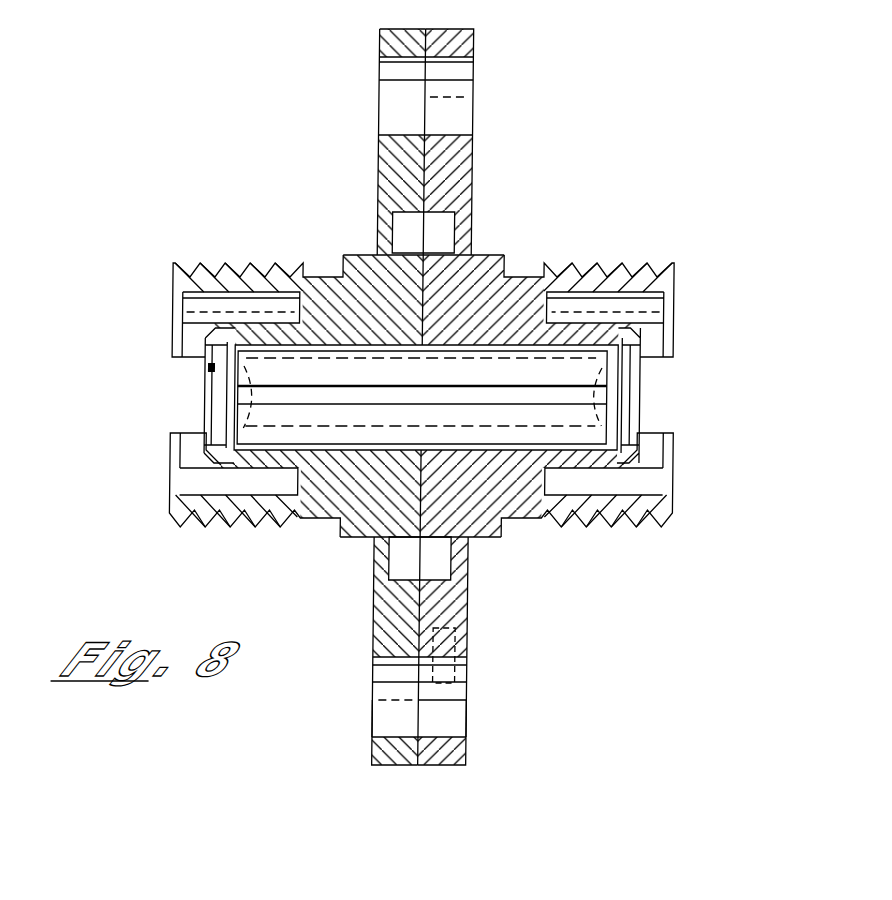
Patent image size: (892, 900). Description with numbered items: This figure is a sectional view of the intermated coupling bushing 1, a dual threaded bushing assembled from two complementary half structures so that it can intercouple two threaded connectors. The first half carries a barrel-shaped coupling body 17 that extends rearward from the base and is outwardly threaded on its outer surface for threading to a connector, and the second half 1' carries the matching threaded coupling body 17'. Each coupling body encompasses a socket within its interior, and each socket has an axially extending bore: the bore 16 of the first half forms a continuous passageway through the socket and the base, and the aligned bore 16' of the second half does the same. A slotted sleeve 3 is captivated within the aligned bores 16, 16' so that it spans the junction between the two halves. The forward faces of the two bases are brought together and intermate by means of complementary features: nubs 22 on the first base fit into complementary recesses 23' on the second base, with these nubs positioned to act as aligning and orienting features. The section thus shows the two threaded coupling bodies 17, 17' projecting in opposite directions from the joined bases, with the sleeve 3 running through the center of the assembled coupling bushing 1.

The coupling bushing 1 is at (380, 386).
The coupling bushing half 1' is at (497, 390).
The coupling body 17 is at (205, 379).
The coupling body 17' is at (632, 381).
The slotted sleeve 3 is at (515, 352).
The bore 16 is at (165, 402).
The bore 16' is at (677, 395).
The recesses 23' is at (484, 651).
The nubs 22 is at (474, 690).